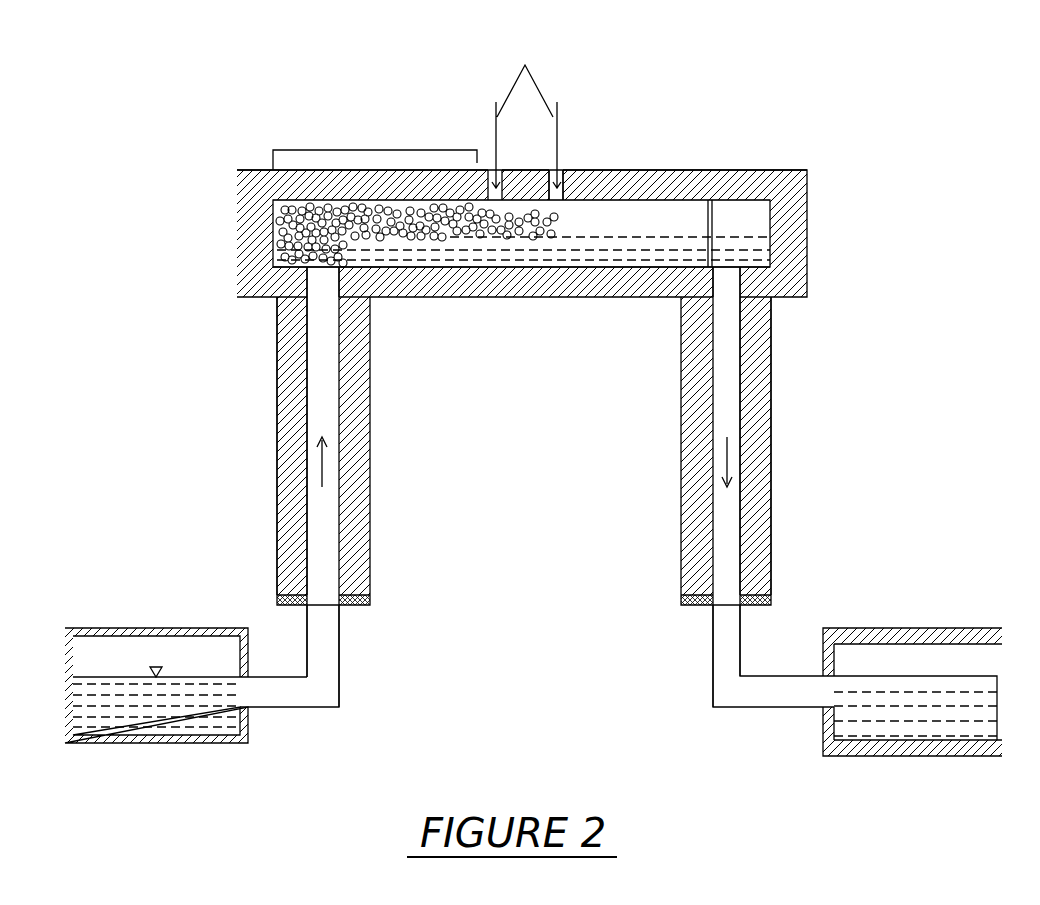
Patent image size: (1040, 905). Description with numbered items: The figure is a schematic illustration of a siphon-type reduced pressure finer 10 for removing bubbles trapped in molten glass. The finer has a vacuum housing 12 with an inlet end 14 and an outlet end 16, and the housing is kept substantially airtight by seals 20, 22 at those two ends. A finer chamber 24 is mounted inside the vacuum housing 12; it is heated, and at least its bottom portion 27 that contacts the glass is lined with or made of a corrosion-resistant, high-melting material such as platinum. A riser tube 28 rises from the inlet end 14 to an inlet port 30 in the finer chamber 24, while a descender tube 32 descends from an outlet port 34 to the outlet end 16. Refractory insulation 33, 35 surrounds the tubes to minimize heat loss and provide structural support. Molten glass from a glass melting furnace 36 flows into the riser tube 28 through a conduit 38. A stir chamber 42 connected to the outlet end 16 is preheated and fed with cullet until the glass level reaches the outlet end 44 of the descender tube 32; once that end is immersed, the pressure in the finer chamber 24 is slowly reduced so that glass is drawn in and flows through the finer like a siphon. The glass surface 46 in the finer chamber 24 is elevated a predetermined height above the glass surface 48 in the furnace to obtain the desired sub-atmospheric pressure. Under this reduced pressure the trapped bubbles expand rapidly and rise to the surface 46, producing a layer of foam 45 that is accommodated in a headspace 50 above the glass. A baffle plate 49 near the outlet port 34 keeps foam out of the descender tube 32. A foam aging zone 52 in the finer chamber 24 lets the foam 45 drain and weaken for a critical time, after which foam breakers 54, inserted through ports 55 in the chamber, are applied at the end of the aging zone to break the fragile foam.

The reduced pressure finer 10 is at (305, 48).
The vacuum housing 12 is at (243, 212).
The inlet end 14 is at (370, 583).
The outlet end 16 is at (683, 585).
The seal 20 is at (355, 605).
The seal 22 is at (698, 608).
The finer chamber 24 is at (757, 197).
The bottom portion 27 is at (525, 273).
The riser tube 28 is at (307, 385).
The inlet port 30 is at (305, 272).
The descender tube 32 is at (742, 368).
The refractory insulation 33 is at (285, 507).
The outlet port 34 is at (753, 298).
The refractory insulation 35 is at (762, 453).
The glass melting furnace 36 is at (168, 628).
The conduit 38 is at (341, 697).
The stir chamber 42 is at (927, 627).
The outlet end of descender tube 44 is at (730, 608).
The foam 45 is at (302, 210).
The glass surface 46 is at (580, 235).
The glass surface in melting furnace 48 is at (98, 673).
The baffle plate 49 is at (718, 200).
The headspace 50 is at (647, 212).
The foam aging zone 52 is at (373, 150).
The foam breakers 54 is at (526, 113).
The ports 55 is at (567, 172).